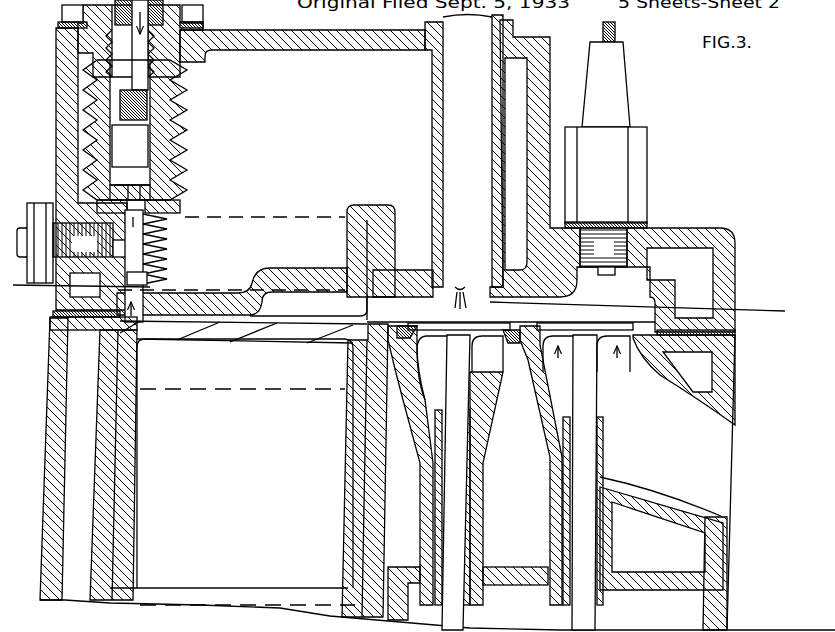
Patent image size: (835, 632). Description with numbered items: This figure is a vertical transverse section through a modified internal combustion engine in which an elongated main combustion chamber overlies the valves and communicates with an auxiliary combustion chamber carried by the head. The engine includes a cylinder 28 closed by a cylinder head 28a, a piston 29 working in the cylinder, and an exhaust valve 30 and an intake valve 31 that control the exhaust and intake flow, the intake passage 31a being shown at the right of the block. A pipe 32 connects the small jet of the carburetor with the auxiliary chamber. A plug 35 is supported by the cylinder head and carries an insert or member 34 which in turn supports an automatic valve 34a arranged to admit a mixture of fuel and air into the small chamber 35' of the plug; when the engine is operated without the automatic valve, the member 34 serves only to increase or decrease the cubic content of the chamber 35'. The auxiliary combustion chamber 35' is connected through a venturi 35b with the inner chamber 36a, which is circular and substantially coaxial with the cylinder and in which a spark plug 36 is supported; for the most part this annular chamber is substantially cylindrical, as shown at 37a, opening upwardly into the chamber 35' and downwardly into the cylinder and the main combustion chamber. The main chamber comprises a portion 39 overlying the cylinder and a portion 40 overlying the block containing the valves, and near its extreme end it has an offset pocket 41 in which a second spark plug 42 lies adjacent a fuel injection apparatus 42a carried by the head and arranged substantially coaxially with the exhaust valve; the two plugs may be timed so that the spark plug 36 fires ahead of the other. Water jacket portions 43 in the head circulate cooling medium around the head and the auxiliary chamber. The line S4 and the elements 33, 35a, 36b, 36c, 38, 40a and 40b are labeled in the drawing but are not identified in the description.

The cylinder 28 is at (47, 493).
The cylinder head 28a is at (60, 130).
The piston 29 is at (134, 468).
The exhaust valve 30 is at (446, 368).
The intake valve 31 is at (576, 376).
The intake passage 31a is at (735, 456).
The pipe 32 is at (62, 22).
The cap 33 is at (115, 41).
The insert 34 is at (124, 50).
The automatic valve 34a is at (120, 97).
The plug 35 is at (154, 130).
The sleeve chamber 35a is at (130, 166).
The small chamber 35' is at (133, 184).
The venturi 35b is at (160, 211).
The spark plug 36 is at (72, 243).
The inner chamber 36a is at (134, 252).
The valve disc 36b is at (132, 278).
The passage 36c is at (133, 314).
The cylindrical portion of the annular combustion chamber 37a is at (378, 210).
The gasket plate 38 is at (238, 323).
The main combustion chamber portion 39 is at (308, 308).
The main combustion chamber portion 40 is at (422, 307).
The lower chamber level 40a is at (277, 611).
The upper chamber level 40b is at (320, 375).
The pocket 41 is at (612, 176).
The spark plug 42 is at (606, 148).
The fuel injection apparatus 42a is at (468, 93).
The water jacket portions 43 is at (446, 162).
The section line S4 is at (40, 208).